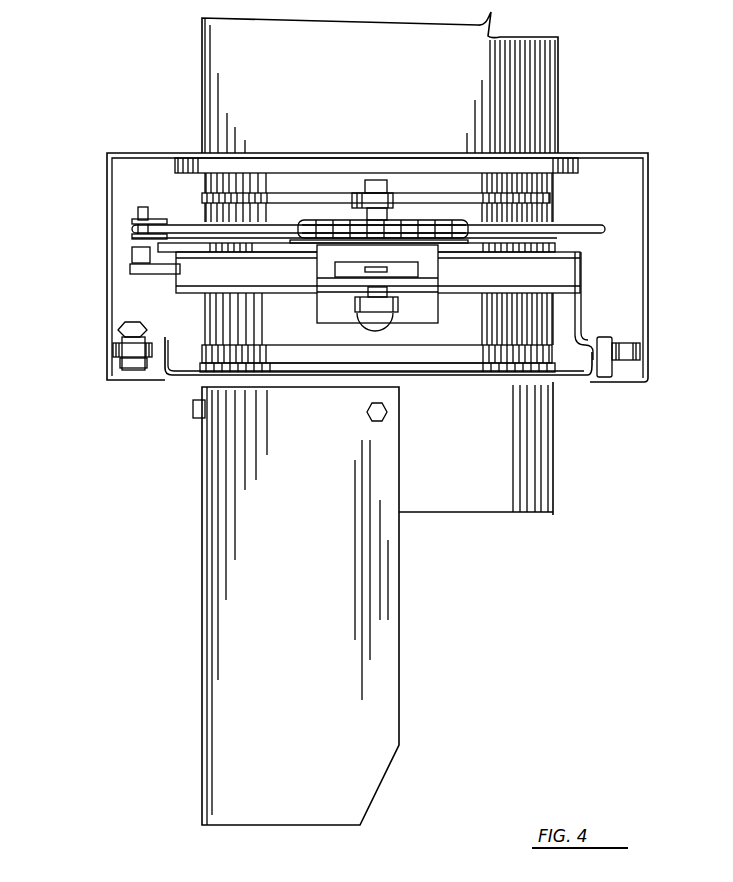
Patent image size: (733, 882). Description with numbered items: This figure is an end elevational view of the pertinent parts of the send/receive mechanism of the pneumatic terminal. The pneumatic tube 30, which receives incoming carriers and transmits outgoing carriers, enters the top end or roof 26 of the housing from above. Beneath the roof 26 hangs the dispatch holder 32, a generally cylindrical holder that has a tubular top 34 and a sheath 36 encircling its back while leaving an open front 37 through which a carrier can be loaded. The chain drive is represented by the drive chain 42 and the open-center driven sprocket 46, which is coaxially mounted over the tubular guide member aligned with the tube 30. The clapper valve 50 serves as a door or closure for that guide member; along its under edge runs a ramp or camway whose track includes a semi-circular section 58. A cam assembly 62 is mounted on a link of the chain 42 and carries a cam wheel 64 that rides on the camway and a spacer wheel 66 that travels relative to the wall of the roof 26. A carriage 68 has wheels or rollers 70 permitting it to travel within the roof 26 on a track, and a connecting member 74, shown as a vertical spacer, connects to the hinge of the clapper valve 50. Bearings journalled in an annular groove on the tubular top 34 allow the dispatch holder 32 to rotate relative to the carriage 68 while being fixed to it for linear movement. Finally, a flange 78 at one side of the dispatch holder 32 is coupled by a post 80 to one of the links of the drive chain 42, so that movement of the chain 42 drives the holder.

The top end or roof 26 is at (650, 228).
The pneumatic tube 30 is at (551, 115).
The dispatch holder 32 is at (617, 470).
The tubular top 34 is at (552, 428).
The sheath 36 is at (208, 622).
The open front 37 is at (523, 582).
The drive chain 42 is at (407, 220).
The open-center driven sprocket 46 is at (575, 223).
The clapper valve 50 is at (215, 262).
The semi-circular section 58 is at (183, 302).
The cam assembly 62 is at (323, 267).
The cam wheel 64 is at (390, 328).
The spacer wheel 66 is at (355, 298).
The carriage 68 is at (177, 377).
The wheels or rollers 70 is at (110, 362).
The connecting member 74 is at (587, 328).
The flange 78 is at (133, 257).
The post 80 is at (133, 247).